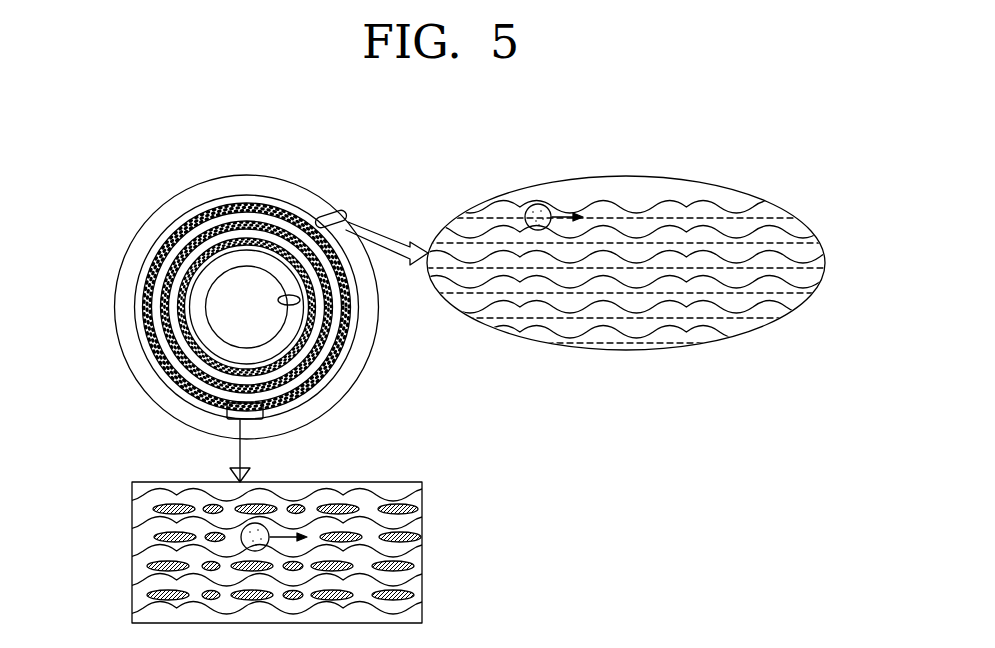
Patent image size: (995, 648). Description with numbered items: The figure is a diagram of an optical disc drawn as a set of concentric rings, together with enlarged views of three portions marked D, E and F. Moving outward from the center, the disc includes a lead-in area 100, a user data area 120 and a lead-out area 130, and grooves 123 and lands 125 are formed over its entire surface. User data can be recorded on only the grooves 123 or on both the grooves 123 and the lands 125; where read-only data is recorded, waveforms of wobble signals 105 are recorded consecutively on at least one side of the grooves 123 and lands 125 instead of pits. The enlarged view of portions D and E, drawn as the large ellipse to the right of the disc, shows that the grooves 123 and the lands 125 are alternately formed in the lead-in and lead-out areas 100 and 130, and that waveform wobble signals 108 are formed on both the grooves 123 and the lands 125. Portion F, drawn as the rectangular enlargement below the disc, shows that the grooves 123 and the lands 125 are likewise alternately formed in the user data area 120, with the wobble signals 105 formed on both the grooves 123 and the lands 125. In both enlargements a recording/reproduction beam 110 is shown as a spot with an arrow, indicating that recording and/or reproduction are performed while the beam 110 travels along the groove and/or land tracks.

The lead-in area 100 is at (204, 282).
The wobble signals 105 is at (357, 490).
The waveform wobble signals 108 is at (667, 200).
The recording/reproduction beam 110 is at (412, 341).
The user data area 120 is at (135, 298).
The grooves 123 is at (466, 392).
The lands 125 is at (469, 420).
The lead-out area 130 is at (212, 190).
The portion D is at (278, 300).
The portion E is at (336, 216).
The portion F is at (227, 418).